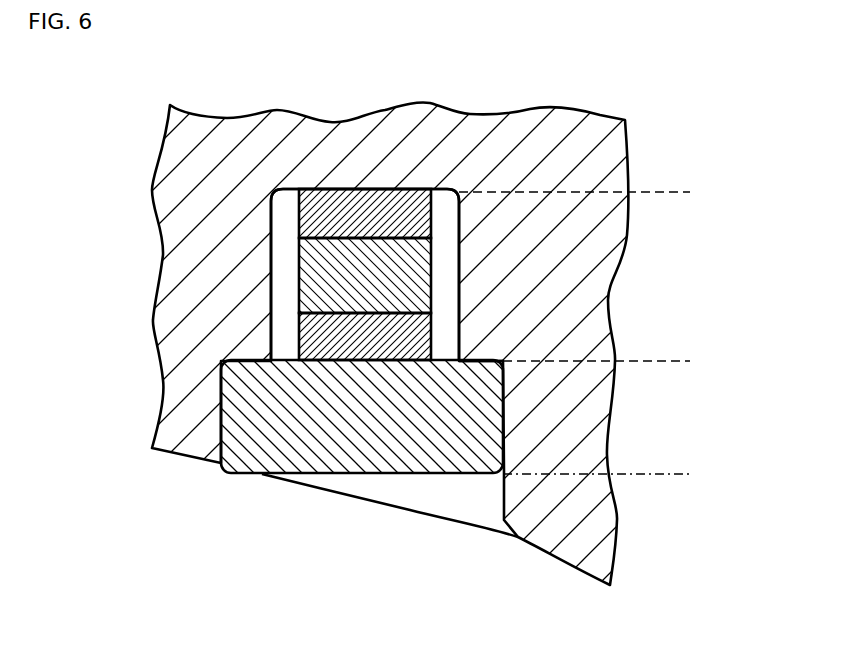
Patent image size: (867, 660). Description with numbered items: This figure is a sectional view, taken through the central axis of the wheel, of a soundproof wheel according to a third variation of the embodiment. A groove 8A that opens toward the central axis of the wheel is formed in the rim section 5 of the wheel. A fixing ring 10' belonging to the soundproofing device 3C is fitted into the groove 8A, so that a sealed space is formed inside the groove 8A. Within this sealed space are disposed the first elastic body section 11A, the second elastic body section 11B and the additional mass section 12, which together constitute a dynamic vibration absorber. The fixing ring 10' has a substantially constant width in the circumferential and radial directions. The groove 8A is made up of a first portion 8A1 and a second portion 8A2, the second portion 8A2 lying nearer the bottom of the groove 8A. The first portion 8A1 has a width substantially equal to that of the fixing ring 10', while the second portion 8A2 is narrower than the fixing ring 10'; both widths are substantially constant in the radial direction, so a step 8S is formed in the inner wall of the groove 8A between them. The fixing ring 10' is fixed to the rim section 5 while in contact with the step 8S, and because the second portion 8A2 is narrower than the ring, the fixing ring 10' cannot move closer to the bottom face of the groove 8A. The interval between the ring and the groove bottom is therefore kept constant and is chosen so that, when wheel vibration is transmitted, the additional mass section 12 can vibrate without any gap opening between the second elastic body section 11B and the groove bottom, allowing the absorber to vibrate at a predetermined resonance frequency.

The rim section 5 is at (516, 140).
The groove 8A is at (336, 194).
The second portion 8A2 is at (689, 192).
The first portion 8A1 is at (689, 361).
The step 8S is at (481, 363).
The soundproofing device 3C is at (260, 331).
The second elastic body section 11B is at (299, 220).
The additional mass section 12 is at (299, 278).
The first elastic body section 11A is at (299, 338).
The fixing ring 10' is at (299, 416).